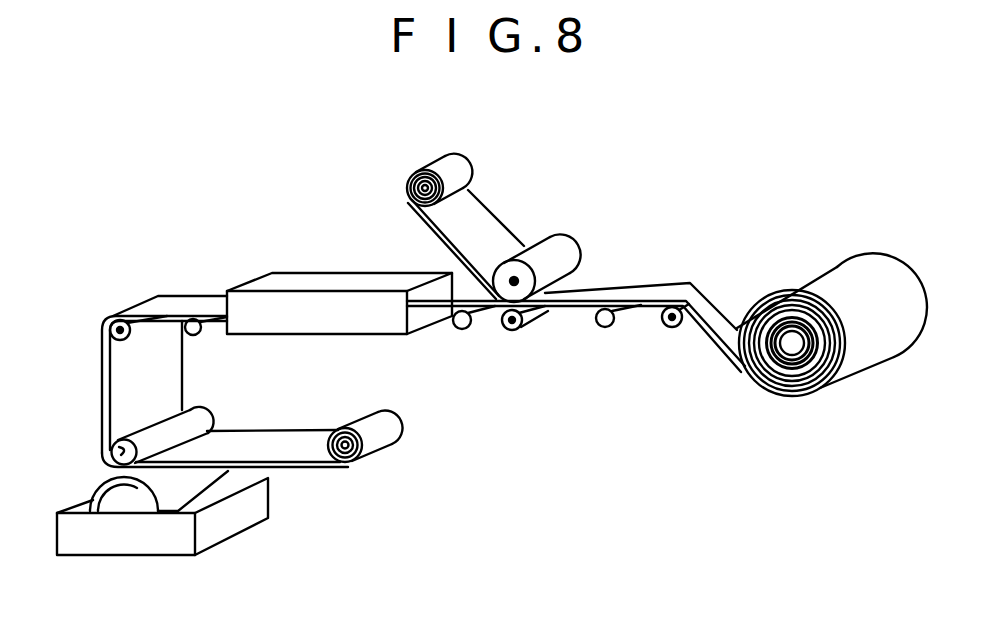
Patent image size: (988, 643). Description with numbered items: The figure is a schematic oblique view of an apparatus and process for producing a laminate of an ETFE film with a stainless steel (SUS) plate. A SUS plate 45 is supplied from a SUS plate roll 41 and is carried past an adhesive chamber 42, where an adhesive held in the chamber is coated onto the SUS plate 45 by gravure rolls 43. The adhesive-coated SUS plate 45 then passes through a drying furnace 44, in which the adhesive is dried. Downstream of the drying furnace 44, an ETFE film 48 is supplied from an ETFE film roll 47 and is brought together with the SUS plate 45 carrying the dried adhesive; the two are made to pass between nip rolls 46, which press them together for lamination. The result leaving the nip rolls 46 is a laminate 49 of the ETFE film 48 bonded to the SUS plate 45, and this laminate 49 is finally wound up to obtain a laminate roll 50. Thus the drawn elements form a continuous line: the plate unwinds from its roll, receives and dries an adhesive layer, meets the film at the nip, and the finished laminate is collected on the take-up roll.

The SUS plate roll 41 is at (358, 422).
The adhesive chamber 42 is at (151, 536).
The gravure rolls 43 is at (113, 463).
The drying furnace 44 is at (338, 283).
The SUS plate 45 is at (101, 388).
The nip rolls 46 is at (556, 290).
The ETFE film roll 47 is at (446, 172).
The ETFE film 48 is at (497, 243).
The laminate 49 is at (663, 290).
The laminate roll 50 is at (822, 284).